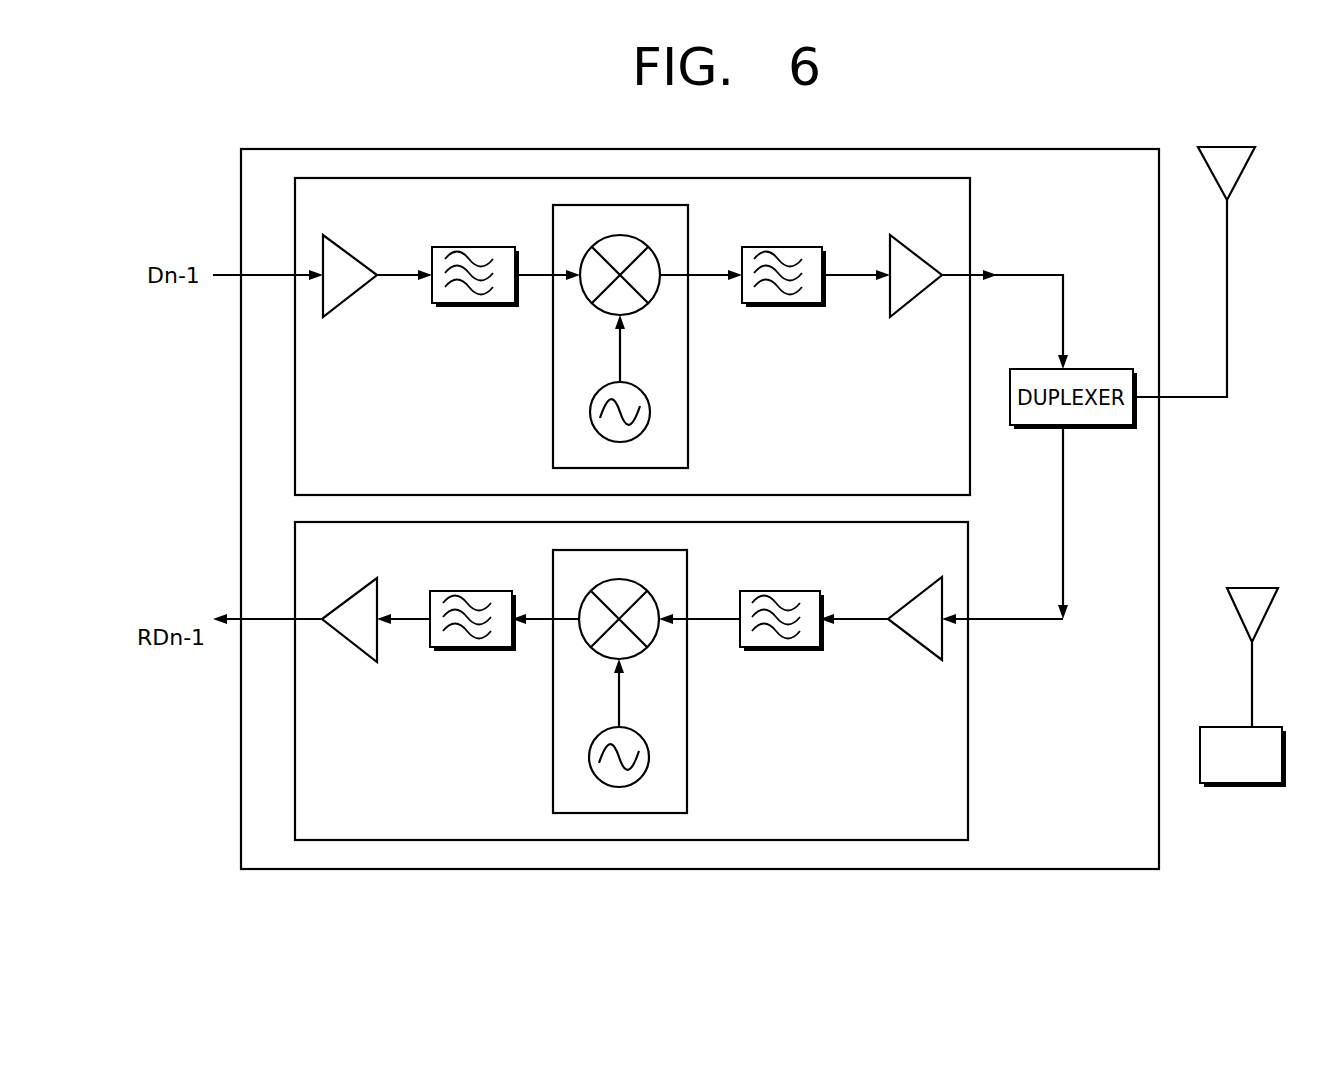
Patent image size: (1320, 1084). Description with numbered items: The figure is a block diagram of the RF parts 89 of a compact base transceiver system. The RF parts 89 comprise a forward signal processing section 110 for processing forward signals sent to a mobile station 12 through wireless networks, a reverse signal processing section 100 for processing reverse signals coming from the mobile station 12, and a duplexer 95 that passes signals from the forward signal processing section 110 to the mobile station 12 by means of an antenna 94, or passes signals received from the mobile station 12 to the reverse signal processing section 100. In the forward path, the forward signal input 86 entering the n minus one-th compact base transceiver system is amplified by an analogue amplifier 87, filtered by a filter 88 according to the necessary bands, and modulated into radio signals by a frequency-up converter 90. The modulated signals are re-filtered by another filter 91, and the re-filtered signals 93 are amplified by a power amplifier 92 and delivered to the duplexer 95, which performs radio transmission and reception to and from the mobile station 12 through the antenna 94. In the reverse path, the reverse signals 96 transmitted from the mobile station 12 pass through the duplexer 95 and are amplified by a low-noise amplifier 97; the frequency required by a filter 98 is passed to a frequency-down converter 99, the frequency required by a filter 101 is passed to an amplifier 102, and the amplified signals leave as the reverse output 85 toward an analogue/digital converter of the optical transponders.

The mobile station 12 is at (1242, 785).
The receive data output line 85 is at (265, 617).
The transmit data input line 86 is at (266, 272).
The analogue amplifier 87 is at (336, 310).
The filter 88 is at (474, 305).
The RF parts 89 is at (620, 148).
The frequency-up converter 90 is at (689, 425).
The filter 91 is at (784, 305).
The power amplifier 92 is at (930, 287).
The re-filtered signals 93 is at (1022, 274).
The antenna 94 is at (1225, 140).
The duplexer 95 is at (1090, 428).
The reverse signals 96 is at (1022, 621).
The low-noise amplifier 97 is at (900, 634).
The filter 98 is at (780, 649).
The frequency-down converter 99 is at (688, 783).
The reverse signal processing section 100 is at (969, 796).
The filter 101 is at (473, 649).
The amplifier 102 is at (337, 633).
The forward signal processing section 110 is at (970, 188).